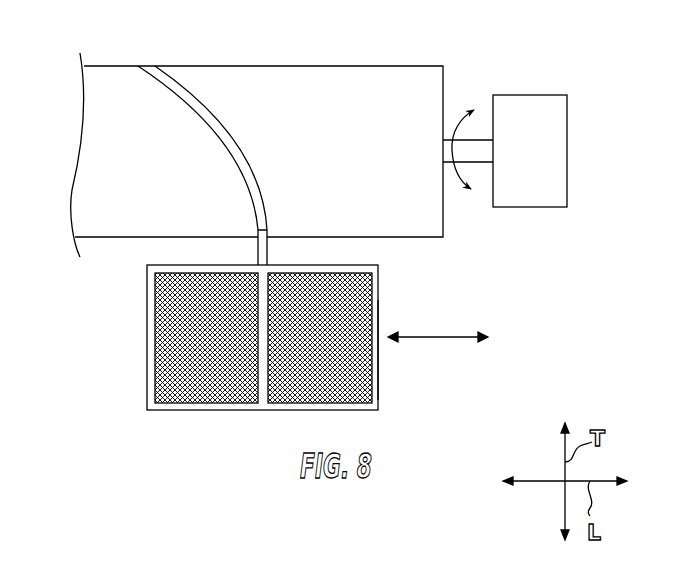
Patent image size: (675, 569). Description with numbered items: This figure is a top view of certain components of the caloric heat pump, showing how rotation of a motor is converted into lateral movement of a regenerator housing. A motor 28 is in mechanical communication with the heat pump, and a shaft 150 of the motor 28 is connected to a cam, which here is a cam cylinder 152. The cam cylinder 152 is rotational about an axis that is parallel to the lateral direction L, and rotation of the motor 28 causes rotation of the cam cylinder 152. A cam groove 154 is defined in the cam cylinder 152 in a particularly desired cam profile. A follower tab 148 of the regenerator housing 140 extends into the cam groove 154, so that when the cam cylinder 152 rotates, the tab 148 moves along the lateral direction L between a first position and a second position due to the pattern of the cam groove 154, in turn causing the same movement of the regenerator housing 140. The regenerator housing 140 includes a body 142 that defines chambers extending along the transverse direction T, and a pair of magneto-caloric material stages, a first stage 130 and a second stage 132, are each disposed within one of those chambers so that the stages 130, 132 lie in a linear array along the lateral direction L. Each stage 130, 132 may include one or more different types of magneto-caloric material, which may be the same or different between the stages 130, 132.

The motor 28 is at (541, 166).
The first stage 130 is at (197, 312).
The second stage 132 is at (327, 307).
The regenerator housing 140 is at (145, 358).
The body 142 is at (380, 371).
The follower tab 148 is at (278, 253).
The shaft 150 is at (475, 152).
The cam cylinder 152 is at (295, 100).
The cam groove 154 is at (214, 112).